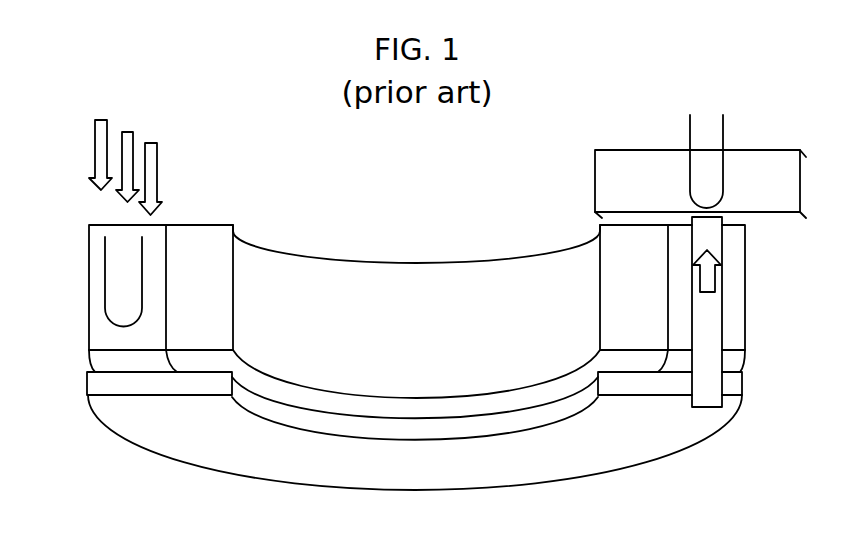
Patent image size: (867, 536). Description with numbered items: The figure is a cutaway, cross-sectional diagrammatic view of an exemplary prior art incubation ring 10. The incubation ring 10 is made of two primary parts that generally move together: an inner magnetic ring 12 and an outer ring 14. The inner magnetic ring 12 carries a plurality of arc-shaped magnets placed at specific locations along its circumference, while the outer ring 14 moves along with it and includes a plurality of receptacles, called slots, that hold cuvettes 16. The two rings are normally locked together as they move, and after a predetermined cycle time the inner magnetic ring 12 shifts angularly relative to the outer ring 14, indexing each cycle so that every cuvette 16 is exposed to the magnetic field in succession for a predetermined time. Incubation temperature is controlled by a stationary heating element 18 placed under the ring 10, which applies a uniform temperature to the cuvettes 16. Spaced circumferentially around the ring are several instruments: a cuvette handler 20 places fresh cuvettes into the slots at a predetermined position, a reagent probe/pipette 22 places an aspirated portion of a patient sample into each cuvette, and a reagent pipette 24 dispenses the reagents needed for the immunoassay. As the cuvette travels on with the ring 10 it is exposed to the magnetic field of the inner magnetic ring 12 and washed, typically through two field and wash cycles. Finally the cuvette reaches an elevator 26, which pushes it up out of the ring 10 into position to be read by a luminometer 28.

The incubation ring 10 is at (303, 242).
The inner magnetic ring 12 is at (672, 298).
The outer ring 14 is at (89, 288).
The cuvette 16 is at (123, 282).
The stationary heating element 18 is at (414, 431).
The cuvette handler 20 is at (100, 143).
The reagent probe/pipette 22 is at (127, 157).
The reagent pipette 24 is at (152, 169).
The elevator 26 is at (707, 312).
The luminometer 28 is at (700, 166).